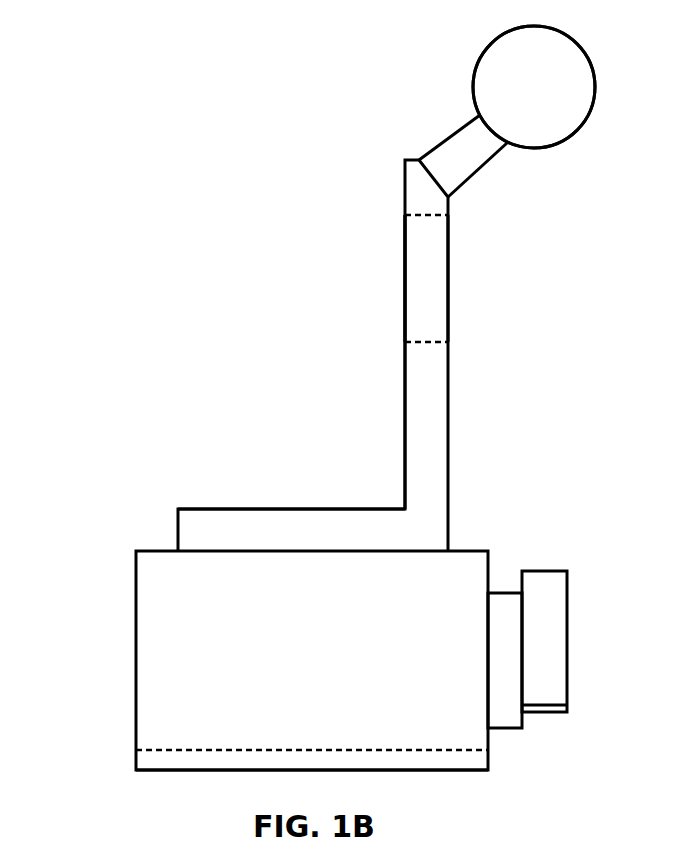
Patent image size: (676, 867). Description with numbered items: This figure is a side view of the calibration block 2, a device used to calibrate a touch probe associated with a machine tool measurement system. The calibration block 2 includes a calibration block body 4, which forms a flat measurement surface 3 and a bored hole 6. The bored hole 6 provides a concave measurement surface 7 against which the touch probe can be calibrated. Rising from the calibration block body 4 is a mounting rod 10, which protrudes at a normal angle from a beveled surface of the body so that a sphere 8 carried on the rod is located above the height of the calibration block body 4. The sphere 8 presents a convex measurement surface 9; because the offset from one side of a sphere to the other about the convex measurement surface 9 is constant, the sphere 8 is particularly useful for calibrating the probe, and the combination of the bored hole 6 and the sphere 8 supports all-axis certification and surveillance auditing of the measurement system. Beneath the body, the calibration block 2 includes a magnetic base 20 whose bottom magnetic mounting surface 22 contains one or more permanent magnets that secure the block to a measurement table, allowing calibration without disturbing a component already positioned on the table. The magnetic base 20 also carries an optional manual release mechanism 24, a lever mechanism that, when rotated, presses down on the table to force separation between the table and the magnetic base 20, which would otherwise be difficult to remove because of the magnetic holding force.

The calibration block 2 is at (137, 113).
The flat measurement surface 3 is at (448, 430).
The calibration block body 4 is at (420, 397).
The bored hole 6 is at (386, 275).
The concave measurement surface 7 is at (430, 341).
The sphere 8 is at (527, 98).
The convex measurement surface 9 is at (581, 104).
The mounting rod 10 is at (446, 165).
The magnetic base 20 is at (300, 665).
The bottom magnetic mounting surface 22 is at (396, 780).
The manual release mechanism 24 is at (534, 657).